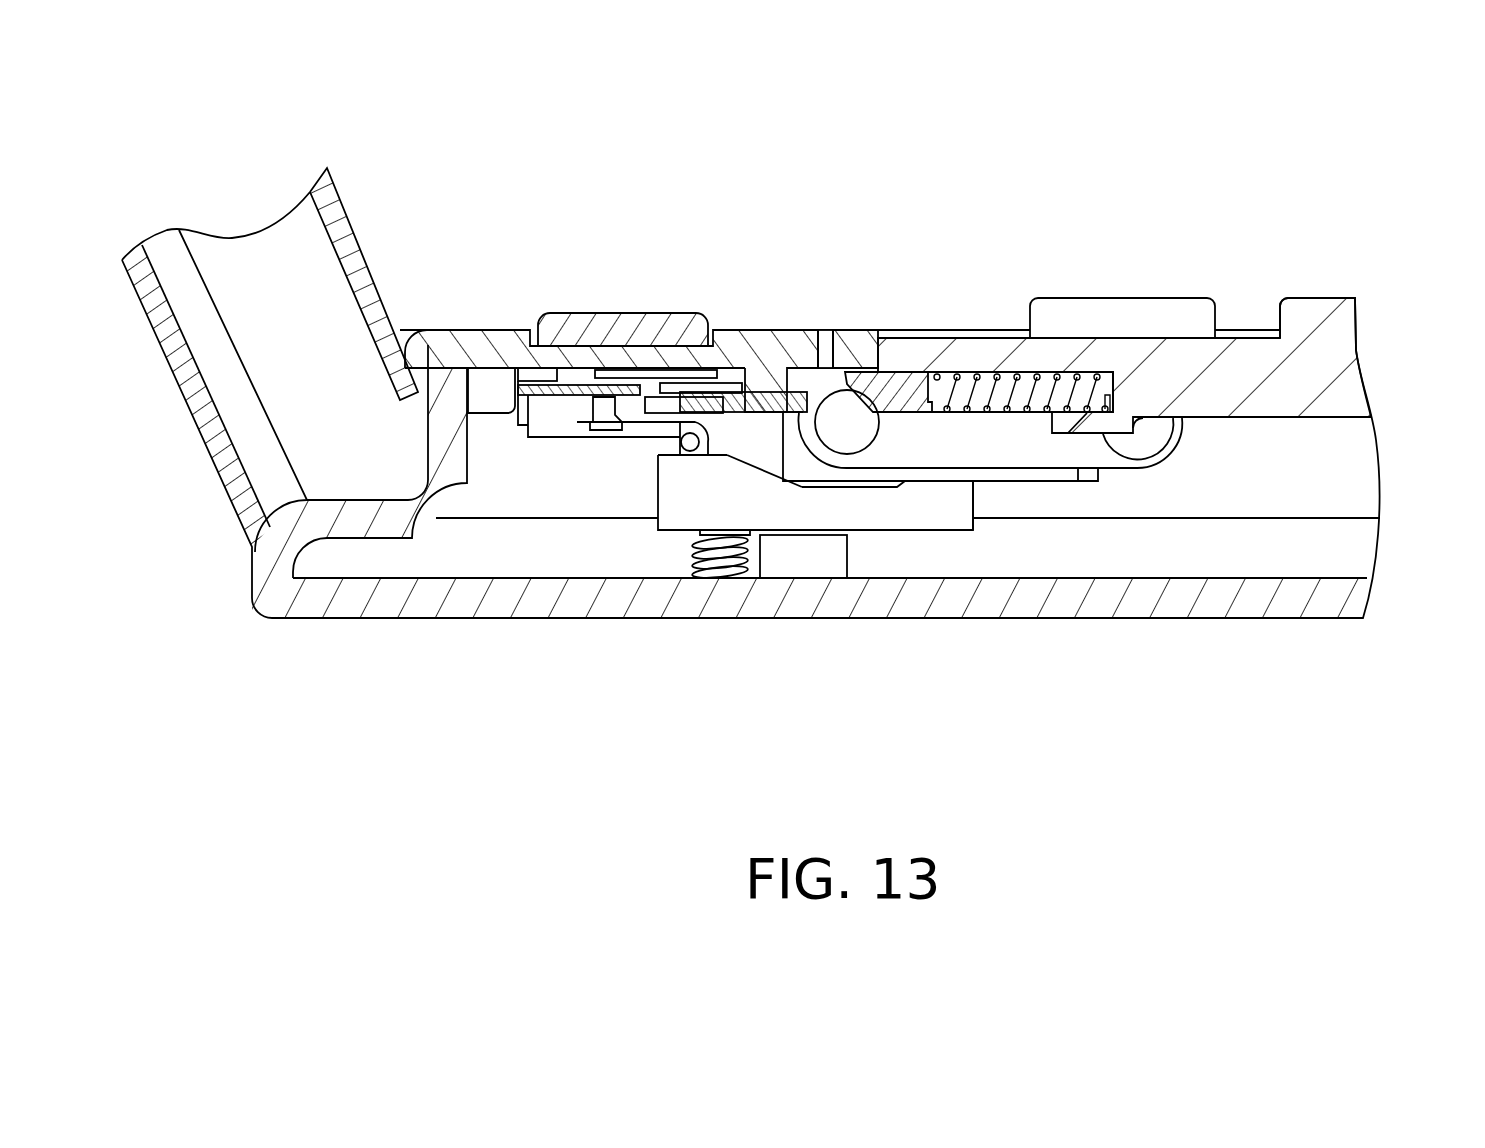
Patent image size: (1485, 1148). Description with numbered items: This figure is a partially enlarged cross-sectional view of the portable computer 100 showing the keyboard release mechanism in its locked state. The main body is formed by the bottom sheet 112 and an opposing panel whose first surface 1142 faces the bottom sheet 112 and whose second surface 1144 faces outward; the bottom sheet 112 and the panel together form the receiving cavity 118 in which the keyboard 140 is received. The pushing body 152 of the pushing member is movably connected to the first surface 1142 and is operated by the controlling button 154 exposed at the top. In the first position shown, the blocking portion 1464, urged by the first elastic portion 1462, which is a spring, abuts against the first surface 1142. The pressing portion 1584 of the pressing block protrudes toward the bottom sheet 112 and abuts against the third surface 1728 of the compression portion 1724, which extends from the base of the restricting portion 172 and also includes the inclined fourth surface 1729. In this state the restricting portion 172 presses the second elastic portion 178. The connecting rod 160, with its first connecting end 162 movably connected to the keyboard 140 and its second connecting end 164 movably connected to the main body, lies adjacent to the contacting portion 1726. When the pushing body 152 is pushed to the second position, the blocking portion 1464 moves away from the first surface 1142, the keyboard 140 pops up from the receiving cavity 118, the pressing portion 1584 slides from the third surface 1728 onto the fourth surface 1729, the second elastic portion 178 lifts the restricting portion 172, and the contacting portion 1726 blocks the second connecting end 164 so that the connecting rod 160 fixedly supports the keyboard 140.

The portable computer 100 is at (677, 125).
The bottom sheet 112 is at (1290, 605).
The receiving cavity 118 is at (1140, 540).
The keyboard 140 is at (1253, 363).
The first surface 1142 is at (470, 358).
The second surface 1144 is at (497, 320).
The pushing body 152 is at (828, 380).
The controlling button 154 is at (620, 328).
The connecting rod 160 is at (1032, 455).
The first connecting end 162 is at (1170, 442).
The second connecting end 164 is at (762, 383).
The restricting portion 172 is at (877, 510).
The compression portion 1724 is at (677, 490).
The contacting portion 1726 is at (957, 488).
The third surface 1728 is at (710, 455).
The fourth surface 1729 is at (763, 472).
The second elastic portion 178 is at (690, 567).
The first elastic portion 1462 is at (968, 365).
The blocking portion 1464 is at (888, 392).
The pressing portion 1584 is at (663, 437).